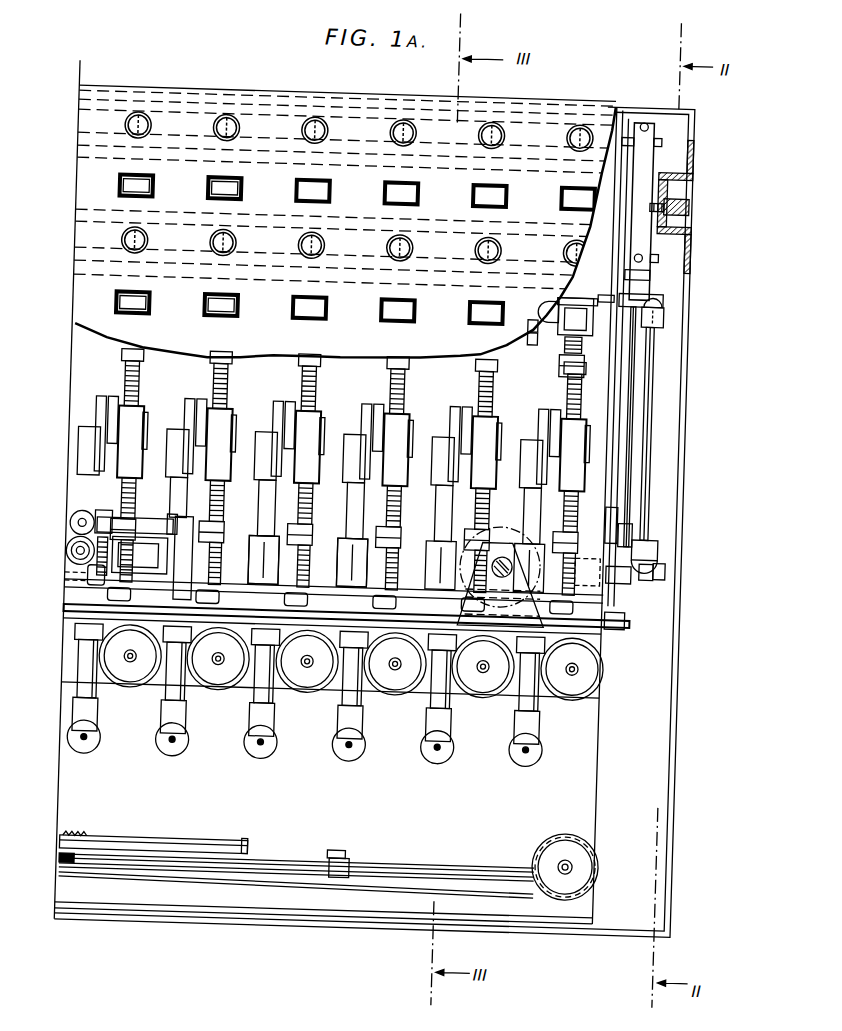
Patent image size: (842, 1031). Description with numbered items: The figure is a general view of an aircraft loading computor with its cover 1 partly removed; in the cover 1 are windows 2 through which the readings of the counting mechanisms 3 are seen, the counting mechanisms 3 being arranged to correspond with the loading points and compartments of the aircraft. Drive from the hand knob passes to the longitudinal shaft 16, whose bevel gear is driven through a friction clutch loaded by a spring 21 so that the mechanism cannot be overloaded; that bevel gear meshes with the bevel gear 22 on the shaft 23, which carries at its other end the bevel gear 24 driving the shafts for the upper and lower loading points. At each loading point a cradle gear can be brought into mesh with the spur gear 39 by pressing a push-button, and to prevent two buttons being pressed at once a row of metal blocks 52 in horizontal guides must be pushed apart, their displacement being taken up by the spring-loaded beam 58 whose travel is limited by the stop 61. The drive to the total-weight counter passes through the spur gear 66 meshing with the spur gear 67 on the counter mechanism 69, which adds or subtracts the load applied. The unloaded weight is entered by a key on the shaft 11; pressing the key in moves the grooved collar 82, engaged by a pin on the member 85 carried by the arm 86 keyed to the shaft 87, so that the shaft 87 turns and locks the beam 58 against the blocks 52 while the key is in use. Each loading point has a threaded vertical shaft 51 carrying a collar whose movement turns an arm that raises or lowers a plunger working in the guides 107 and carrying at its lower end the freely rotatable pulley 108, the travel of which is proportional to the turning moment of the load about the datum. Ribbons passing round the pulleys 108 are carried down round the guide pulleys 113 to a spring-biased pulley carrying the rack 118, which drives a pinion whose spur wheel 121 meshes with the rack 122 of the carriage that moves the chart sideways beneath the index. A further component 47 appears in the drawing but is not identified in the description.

The cover 1 is at (343, 227).
The windows 2 is at (197, 186).
The counting mechanisms 3 is at (128, 193).
The shaft 11 is at (73, 542).
The longitudinal shaft 16 is at (554, 535).
The spring 21 is at (642, 571).
The bevel gear 22 is at (662, 547).
The shaft 23 is at (651, 454).
The bevel gear 24 is at (658, 296).
The spur gear 39 is at (532, 326).
The housing 47 is at (570, 315).
The vertical shaft 51 is at (580, 366).
The metal blocks 52 is at (615, 118).
The spring-loaded beam 58 is at (633, 155).
The stop 61 is at (677, 196).
The spur gear 66 is at (108, 597).
The spur gear 67 is at (124, 536).
The counter mechanism 69 is at (160, 562).
The grooved collar 82 is at (77, 522).
The member 85 is at (171, 534).
The arm 86 is at (189, 563).
The shaft 87 is at (343, 562).
The guides 107 is at (264, 556).
The pulley 108 is at (270, 761).
The guide pulleys 113 is at (547, 848).
The rack 118 is at (210, 844).
The spur wheel 121 is at (73, 833).
The rack 122 is at (91, 863).